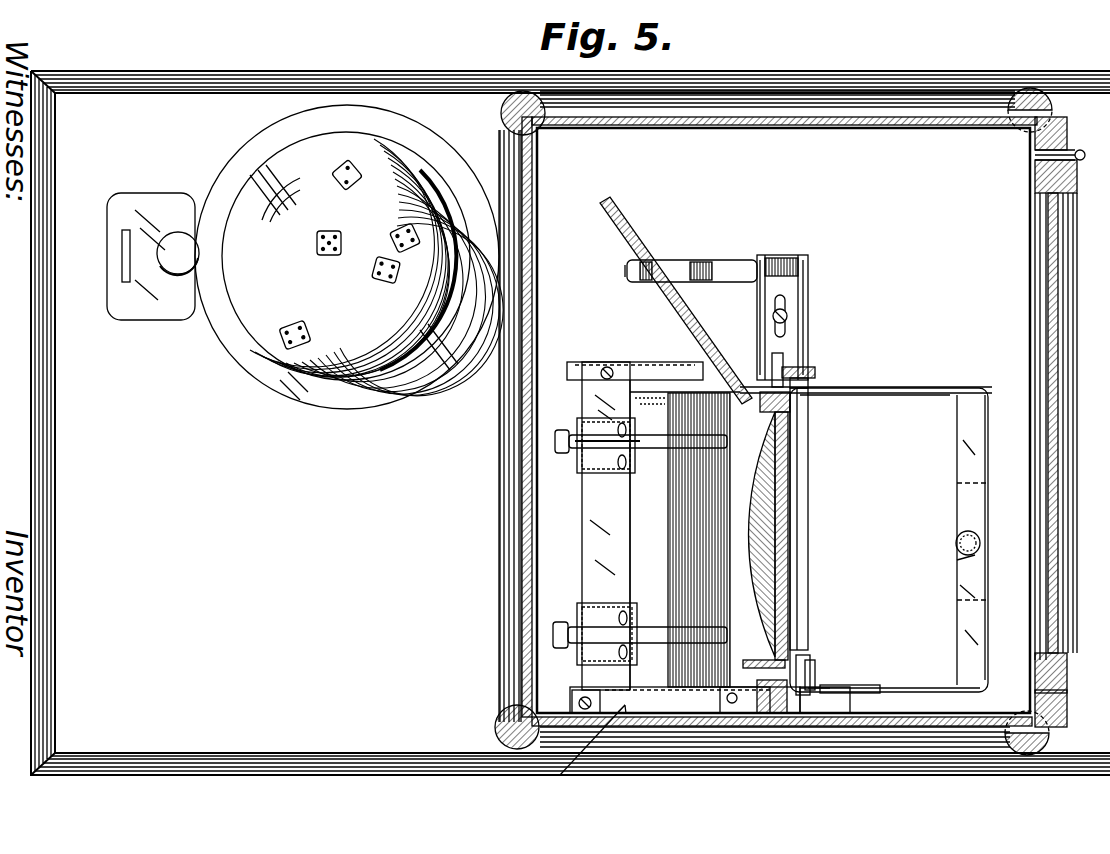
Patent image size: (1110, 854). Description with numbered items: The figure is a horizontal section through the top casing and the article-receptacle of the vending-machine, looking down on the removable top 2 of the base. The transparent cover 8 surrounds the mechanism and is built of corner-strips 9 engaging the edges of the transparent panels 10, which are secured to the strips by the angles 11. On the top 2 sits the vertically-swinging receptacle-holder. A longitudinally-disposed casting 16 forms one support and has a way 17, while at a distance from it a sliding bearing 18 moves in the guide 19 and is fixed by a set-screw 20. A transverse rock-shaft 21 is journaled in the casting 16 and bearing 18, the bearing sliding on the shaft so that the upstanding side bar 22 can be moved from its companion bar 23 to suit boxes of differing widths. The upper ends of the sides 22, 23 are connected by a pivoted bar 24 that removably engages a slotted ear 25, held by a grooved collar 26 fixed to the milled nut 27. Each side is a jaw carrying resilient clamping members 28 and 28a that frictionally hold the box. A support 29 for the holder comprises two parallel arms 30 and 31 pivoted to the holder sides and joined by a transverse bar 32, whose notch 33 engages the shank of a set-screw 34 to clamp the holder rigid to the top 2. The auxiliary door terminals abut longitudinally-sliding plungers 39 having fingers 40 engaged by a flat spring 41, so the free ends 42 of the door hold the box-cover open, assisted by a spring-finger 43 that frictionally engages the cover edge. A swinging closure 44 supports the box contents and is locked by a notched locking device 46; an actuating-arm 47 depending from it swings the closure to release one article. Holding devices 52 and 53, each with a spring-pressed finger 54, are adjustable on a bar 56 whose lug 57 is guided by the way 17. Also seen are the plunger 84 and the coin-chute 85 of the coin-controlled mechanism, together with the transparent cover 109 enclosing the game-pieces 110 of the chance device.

The removable top 2 is at (570, 423).
The transparent cover 8 is at (512, 508).
The corner-strips 9 is at (503, 115).
The transparent panels 10 is at (524, 410).
The angles 11 is at (700, 128).
The casting 16 is at (835, 705).
The way 17 is at (657, 705).
The sliding bearing 18 is at (795, 340).
The guide 19 is at (808, 278).
The set-screw 20 is at (772, 316).
The rock-shaft 21 is at (775, 360).
The side bar 22 is at (773, 690).
The companion bar 23 is at (822, 396).
The pivoted bar 24 is at (810, 545).
The slotted ear 25 is at (812, 390).
The grooved collar 26 is at (810, 385).
The milled nut 27 is at (806, 375).
The resilient clamping member 28 is at (812, 665).
The resilient clamping member 28a is at (800, 418).
The support 29 is at (962, 402).
The arm 30 is at (890, 692).
The arm 31 is at (922, 390).
The transverse bar 32 is at (966, 466).
The notch 33 is at (960, 548).
The set-screw 34 is at (962, 560).
The plungers 39 is at (822, 692).
The fingers 40 is at (828, 662).
The flat spring 41 is at (815, 686).
The free ends 42 is at (692, 380).
The spring-finger 43 is at (680, 265).
The swinging closure 44 is at (740, 590).
The notched locking device 46 is at (705, 697).
The actuating-arm 47 is at (665, 370).
The holding device 52 is at (610, 630).
The holding device 53 is at (600, 460).
The spring-pressed finger 54 is at (705, 448).
The bar 56 is at (590, 530).
The lug 57 is at (564, 758).
The plunger 84 is at (180, 262).
The coin-chute 85 is at (124, 258).
The transparent cover 109 is at (330, 352).
The game-pieces 110 is at (325, 265).